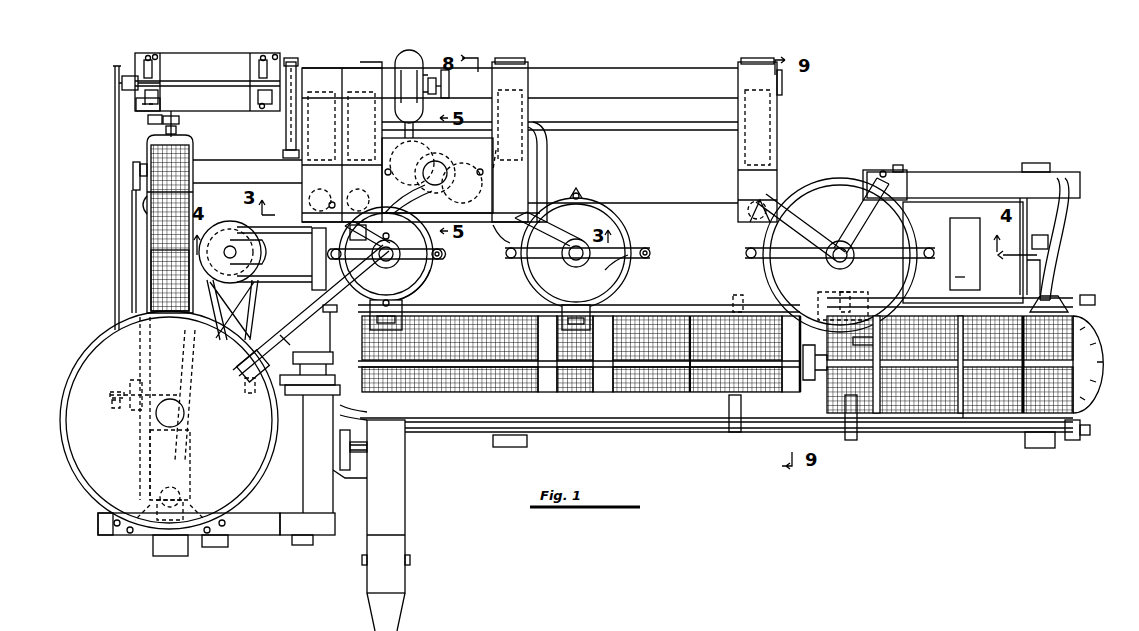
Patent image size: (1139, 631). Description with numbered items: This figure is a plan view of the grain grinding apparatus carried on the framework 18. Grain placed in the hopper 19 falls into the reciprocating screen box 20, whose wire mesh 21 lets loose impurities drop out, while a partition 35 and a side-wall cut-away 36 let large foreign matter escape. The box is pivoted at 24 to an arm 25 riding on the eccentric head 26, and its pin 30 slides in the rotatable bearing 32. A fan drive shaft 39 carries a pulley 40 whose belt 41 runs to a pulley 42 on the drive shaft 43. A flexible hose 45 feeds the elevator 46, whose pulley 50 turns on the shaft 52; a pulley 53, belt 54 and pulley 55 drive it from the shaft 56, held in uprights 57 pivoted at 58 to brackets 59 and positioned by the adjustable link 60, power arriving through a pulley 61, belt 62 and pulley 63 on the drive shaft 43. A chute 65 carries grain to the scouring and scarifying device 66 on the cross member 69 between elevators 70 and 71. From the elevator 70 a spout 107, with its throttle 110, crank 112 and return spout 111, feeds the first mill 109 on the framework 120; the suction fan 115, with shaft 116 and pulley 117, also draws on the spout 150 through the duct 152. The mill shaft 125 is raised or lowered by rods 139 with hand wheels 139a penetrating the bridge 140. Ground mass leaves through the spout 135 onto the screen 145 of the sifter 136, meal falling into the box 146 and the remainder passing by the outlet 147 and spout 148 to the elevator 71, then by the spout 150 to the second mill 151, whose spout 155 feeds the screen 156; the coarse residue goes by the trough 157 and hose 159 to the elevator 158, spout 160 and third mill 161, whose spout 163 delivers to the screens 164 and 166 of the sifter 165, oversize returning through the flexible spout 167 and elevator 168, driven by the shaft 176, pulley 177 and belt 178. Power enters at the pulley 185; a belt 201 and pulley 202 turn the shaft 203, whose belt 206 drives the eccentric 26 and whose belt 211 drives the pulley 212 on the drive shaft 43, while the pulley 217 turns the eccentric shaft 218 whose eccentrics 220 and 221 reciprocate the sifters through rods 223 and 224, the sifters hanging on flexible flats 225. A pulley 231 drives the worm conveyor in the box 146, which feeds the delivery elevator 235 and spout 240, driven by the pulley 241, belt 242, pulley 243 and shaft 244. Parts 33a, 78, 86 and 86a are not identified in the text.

The framework 18 is at (256, 535).
The hopper 19 is at (92, 484).
The reciprocating screen box 20 is at (147, 233).
The wire mesh 21 is at (158, 283).
The pivot 24 is at (192, 472).
The arm 25 is at (190, 490).
The eccentric head portion 26 is at (160, 500).
The pin 30 is at (176, 131).
The bearing 32 is at (179, 120).
The valve fitting 33a is at (149, 119).
The partition 35 is at (182, 190).
The cut away portion 36 is at (145, 205).
The fan drive shaft 39 is at (141, 164).
The pulley 40 is at (133, 172).
The belt 41 is at (132, 276).
The pulley 42 is at (132, 400).
The drive shaft 43 is at (110, 392).
The flexible hose connection 45 is at (210, 166).
The elevator 46 is at (340, 68).
The pulley 50 is at (340, 85).
The shaft 52 is at (620, 117).
The pulley 53 is at (286, 120).
The belt 54 is at (283, 153).
The pulley 55 is at (296, 64).
The shaft 56 is at (200, 81).
The uprights 57 is at (158, 96).
The pivot 58 is at (160, 106).
The brackets 59 is at (135, 58).
The adjustable link 60 is at (152, 66).
The pulley 61 is at (122, 82).
The belt 62 is at (115, 137).
The pulley 63 is at (112, 402).
The pipe or chute 65 is at (437, 175).
The scouring and scarifying device 66 is at (490, 122).
The cross member 69 is at (496, 232).
The elevator 70 is at (366, 68).
The elevator 71 is at (530, 76).
The cam 78 is at (448, 165).
The roller 86 is at (400, 165).
The roller pin 86a is at (383, 175).
The spout 107 is at (366, 250).
The first mill 109 is at (420, 284).
The throttle 110 is at (350, 232).
The spout 111 is at (303, 305).
The crank 112 is at (389, 236).
The suction fan 115 is at (409, 94).
The fan drive shaft 116 is at (449, 88).
The pulley 117 is at (437, 84).
The supporting framework 120 is at (695, 190).
The shaft 125 is at (855, 214).
The spout 135 is at (372, 308).
The reciprocating sifter or bolt 136 is at (466, 388).
The rods 139 is at (331, 253).
The nuts or hand wheel 139a is at (447, 262).
The second bridge 140 is at (628, 224).
The screen 145 is at (520, 380).
The box 146 is at (630, 425).
The outlet 147 is at (547, 385).
The spout 148 is at (548, 282).
The spout 150 is at (572, 218).
The second mill 151 is at (598, 276).
The duct 152 is at (548, 150).
The spout 155 is at (573, 309).
The screen 156 is at (612, 388).
The trough 157 is at (786, 385).
The elevator 158 is at (775, 140).
The flexible hose connection 159 is at (752, 232).
The spout 160 is at (805, 220).
The third mill 161 is at (812, 185).
The spout 163 is at (860, 320).
The screen 164 is at (930, 415).
The reciprocating sifter or bolt 165 is at (963, 420).
The screen 166 is at (1040, 432).
The flexible spout 167 is at (1060, 232).
The elevator 168 is at (978, 172).
The shaft 176 is at (1030, 234).
The pulley 177 is at (1027, 270).
The belt 178 is at (1010, 258).
The pulley 185 is at (963, 252).
The belt 201 is at (301, 227).
The pulley 202 is at (235, 225).
The shaft 203 is at (250, 253).
The belt 206 is at (200, 416).
The belt 211 is at (262, 290).
The pulley 212 is at (255, 385).
The pulley 217 is at (306, 392).
The eccentric shaft 218 is at (312, 410).
The eccentric 220 is at (310, 360).
The eccentric 221 is at (268, 356).
The rod 223 is at (415, 365).
The rod 224 is at (345, 322).
The flexible upright bars 225 is at (762, 292).
The pulley 231 is at (370, 405).
The delivery elevator 235 is at (405, 490).
The delivery spout 240 is at (368, 620).
The pulley 241 is at (370, 419).
The belt 242 is at (367, 430).
The pulley 243 is at (367, 472).
The shaft 244 is at (367, 452).